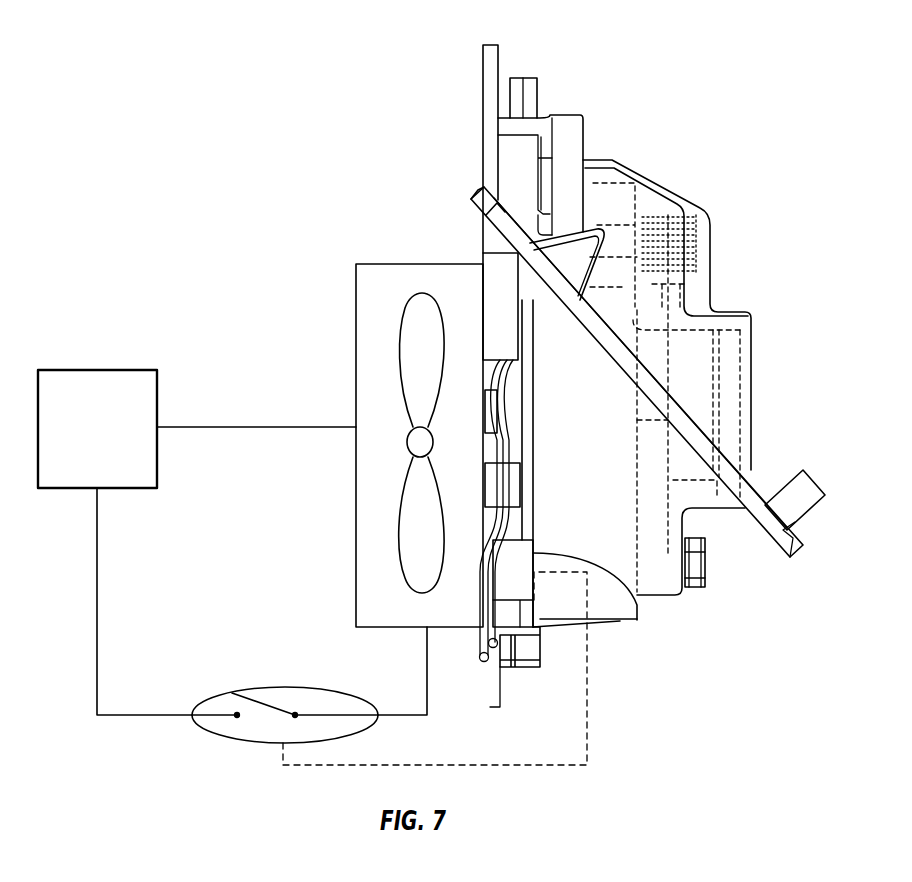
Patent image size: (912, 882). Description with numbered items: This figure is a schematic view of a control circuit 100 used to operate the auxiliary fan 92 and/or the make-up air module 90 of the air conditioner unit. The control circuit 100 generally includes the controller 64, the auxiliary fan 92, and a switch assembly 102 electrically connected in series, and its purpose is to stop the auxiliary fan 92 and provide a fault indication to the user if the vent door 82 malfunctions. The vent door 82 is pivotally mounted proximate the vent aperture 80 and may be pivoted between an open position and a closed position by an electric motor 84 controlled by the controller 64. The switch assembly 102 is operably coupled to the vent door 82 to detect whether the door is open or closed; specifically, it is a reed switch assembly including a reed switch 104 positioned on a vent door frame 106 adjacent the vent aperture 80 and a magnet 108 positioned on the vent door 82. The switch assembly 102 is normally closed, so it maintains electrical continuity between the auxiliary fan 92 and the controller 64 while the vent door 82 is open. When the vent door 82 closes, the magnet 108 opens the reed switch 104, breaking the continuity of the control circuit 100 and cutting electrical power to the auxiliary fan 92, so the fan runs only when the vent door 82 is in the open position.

The controller 64 is at (97, 429).
The vent aperture 80 is at (535, 376).
The vent door 82 is at (727, 445).
The electric motor 84 is at (753, 333).
The make-up air module 90 is at (404, 263).
The auxiliary fan 92 is at (398, 328).
The control circuit 100 is at (63, 336).
The switch assembly 102 is at (228, 736).
The reed switch 104 is at (630, 557).
The vent door frame 106 is at (488, 63).
The magnet 108 is at (819, 484).